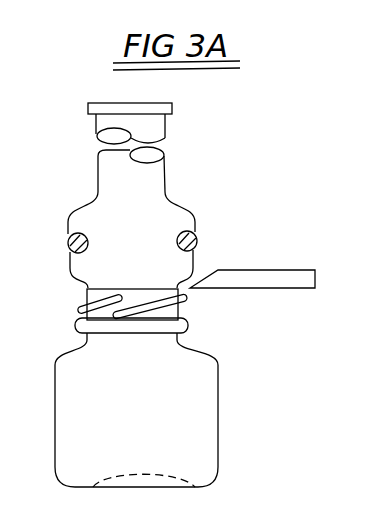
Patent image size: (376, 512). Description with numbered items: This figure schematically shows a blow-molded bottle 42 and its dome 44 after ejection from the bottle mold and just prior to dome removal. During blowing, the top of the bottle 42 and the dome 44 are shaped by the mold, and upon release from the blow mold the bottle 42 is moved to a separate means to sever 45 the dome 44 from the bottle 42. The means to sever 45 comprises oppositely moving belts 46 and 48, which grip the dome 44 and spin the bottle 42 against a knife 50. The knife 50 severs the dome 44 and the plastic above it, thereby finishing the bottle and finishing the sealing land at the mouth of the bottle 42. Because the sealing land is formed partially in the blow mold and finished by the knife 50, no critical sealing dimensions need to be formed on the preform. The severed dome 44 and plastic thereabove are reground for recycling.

The bottle 42 is at (206, 381).
The dome 44 is at (80, 213).
The means to sever 45 is at (196, 230).
The belt 46 is at (69, 240).
The belt 48 is at (196, 233).
The knife 50 is at (272, 286).